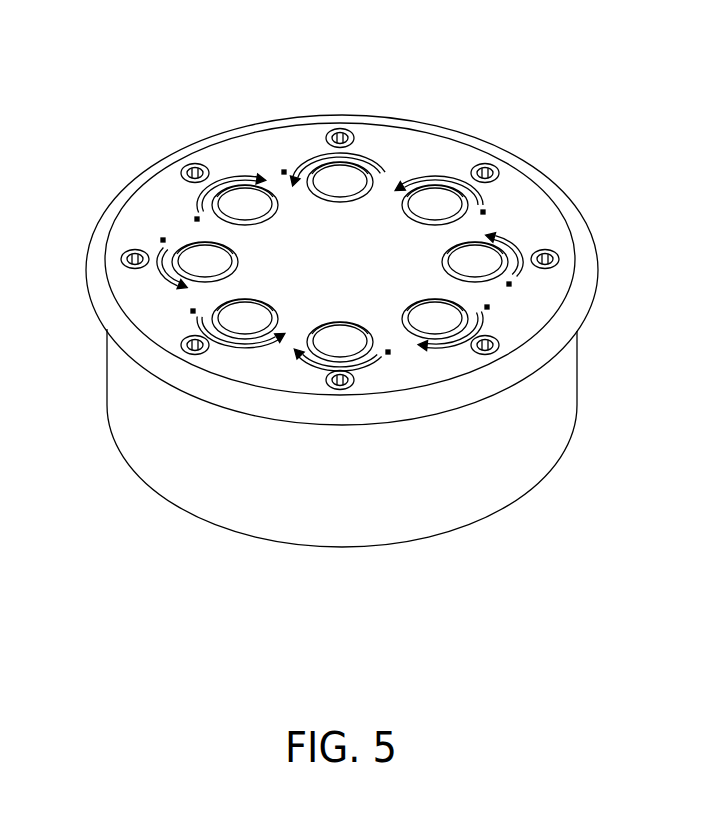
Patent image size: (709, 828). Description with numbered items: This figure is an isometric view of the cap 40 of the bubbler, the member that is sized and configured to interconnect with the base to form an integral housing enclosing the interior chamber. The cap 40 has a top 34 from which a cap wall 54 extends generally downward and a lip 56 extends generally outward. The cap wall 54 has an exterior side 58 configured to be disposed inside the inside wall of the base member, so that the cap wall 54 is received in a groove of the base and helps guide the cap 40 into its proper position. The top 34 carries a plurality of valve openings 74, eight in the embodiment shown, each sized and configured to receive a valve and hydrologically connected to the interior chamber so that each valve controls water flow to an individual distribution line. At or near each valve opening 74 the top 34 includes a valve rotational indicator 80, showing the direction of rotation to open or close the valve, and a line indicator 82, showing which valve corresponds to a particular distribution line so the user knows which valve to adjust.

The cap 40 is at (482, 80).
The top 34 is at (535, 317).
The cap wall 54 is at (209, 486).
The lip 56 is at (155, 363).
The exterior side 58 is at (552, 400).
The valve openings 74 is at (473, 267).
The valve rotational indicators 80 is at (230, 173).
The line indicators 82 is at (338, 133).